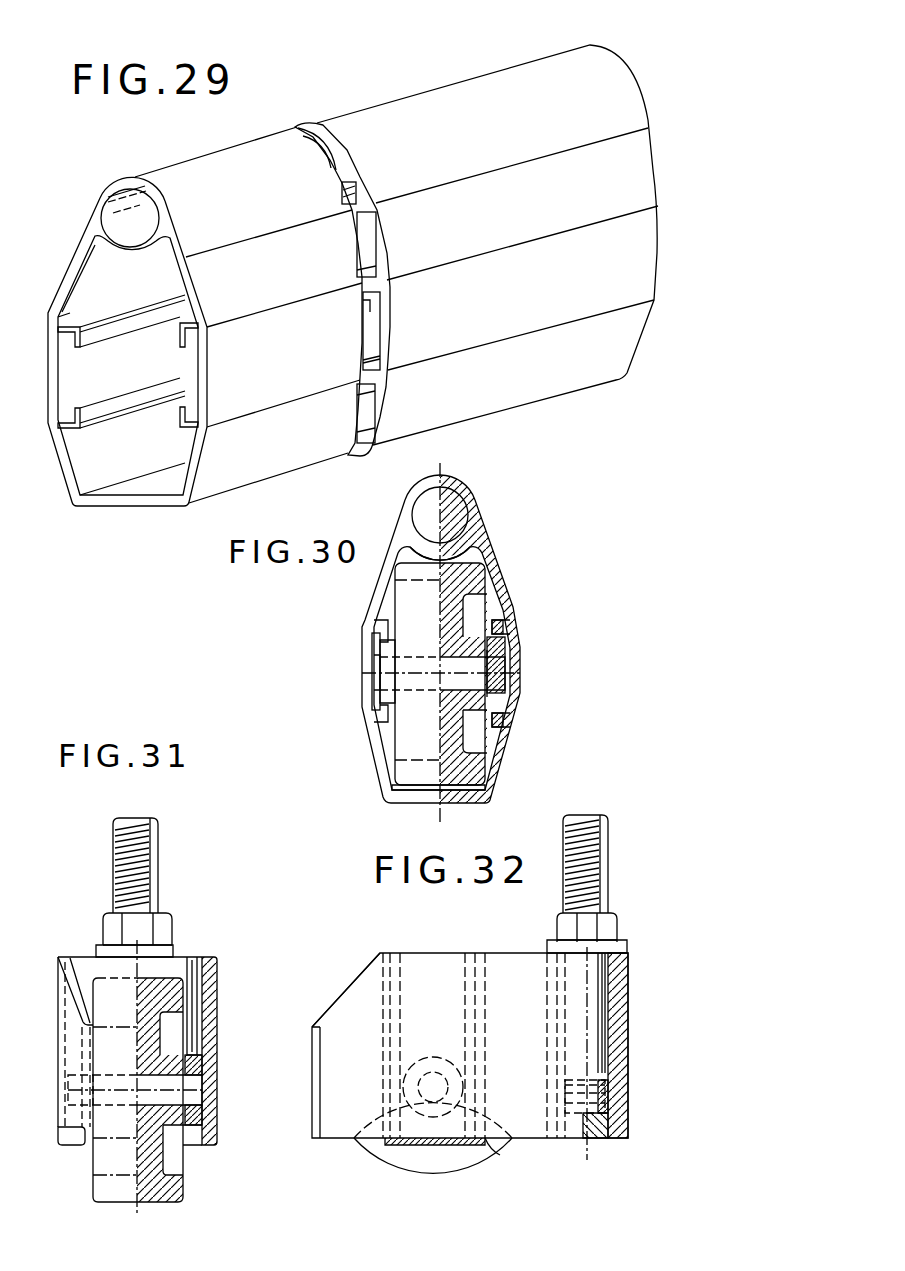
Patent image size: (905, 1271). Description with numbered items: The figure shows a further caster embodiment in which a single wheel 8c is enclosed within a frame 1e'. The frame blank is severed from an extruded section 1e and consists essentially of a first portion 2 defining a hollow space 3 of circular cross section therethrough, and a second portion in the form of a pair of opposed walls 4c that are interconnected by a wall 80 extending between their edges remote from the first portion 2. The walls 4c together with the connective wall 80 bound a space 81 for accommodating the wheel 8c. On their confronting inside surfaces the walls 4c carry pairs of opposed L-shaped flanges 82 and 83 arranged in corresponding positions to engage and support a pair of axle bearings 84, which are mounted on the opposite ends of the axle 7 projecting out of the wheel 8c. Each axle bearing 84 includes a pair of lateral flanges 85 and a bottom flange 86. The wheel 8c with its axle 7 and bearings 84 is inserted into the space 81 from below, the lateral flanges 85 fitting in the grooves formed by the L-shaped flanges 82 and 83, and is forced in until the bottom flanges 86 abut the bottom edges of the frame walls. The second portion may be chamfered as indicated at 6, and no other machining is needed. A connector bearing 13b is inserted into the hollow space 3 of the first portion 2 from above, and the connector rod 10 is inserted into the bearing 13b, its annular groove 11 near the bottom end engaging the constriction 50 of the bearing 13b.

In FIG. 29, the extruded section 1e is at (353, 269).
In FIG. 30, the frame 1e' is at (454, 634).
In FIG. 31, the frame 1e' is at (166, 1040).
In FIG. 32, the frame 1e' is at (470, 1016).
In FIG. 29, the first portion 2 is at (95, 203).
In FIG. 30, the first portion 2 is at (402, 503).
In FIG. 32, the first portion 2 is at (620, 1010).
In FIG. 29, the hollow space 3 is at (153, 207).
In FIG. 30, the hollow space 3 is at (452, 498).
In FIG. 29, the opposed walls 4c is at (92, 285).
In FIG. 30, the opposed walls 4c is at (370, 680).
In FIG. 31, the opposed walls 4c is at (212, 990).
In FIG. 32, the opposed walls 4c is at (450, 965).
In FIG. 32, the chamfer 6 is at (352, 985).
In FIG. 30, the axle 7 is at (490, 672).
In FIG. 31, the axle 7 is at (185, 1085).
In FIG. 30, the wheel 8c is at (402, 748).
In FIG. 31, the wheel 8c is at (105, 1162).
In FIG. 32, the wheel 8c is at (357, 1150).
In FIG. 31, the connector rod 10 is at (115, 844).
In FIG. 32, the connector rod 10 is at (600, 980).
In FIG. 32, the annular groove 11 is at (600, 1107).
In FIG. 32, the connector bearing 13b is at (604, 1142).
In FIG. 32, the constriction 50 is at (600, 1080).
In FIG. 30, the wall 80 is at (410, 803).
In FIG. 31, the wall 80 is at (92, 1124).
In FIG. 30, the space 81 is at (478, 553).
In FIG. 29, the L-shaped flanges 82 is at (110, 327).
In FIG. 30, the L-shaped flanges 82 is at (370, 626).
In FIG. 29, the L-shaped flanges 83 is at (182, 408).
In FIG. 30, the L-shaped flanges 83 is at (497, 610).
In FIG. 31, the L-shaped flanges 83 is at (191, 962).
In FIG. 30, the axle bearings 84 is at (388, 654).
In FIG. 31, the axle bearings 84 is at (207, 1040).
In FIG. 30, the lateral flanges 85 is at (503, 627).
In FIG. 31, the bottom flange 86 is at (198, 1146).
In FIG. 32, the bottom flange 86 is at (500, 1150).